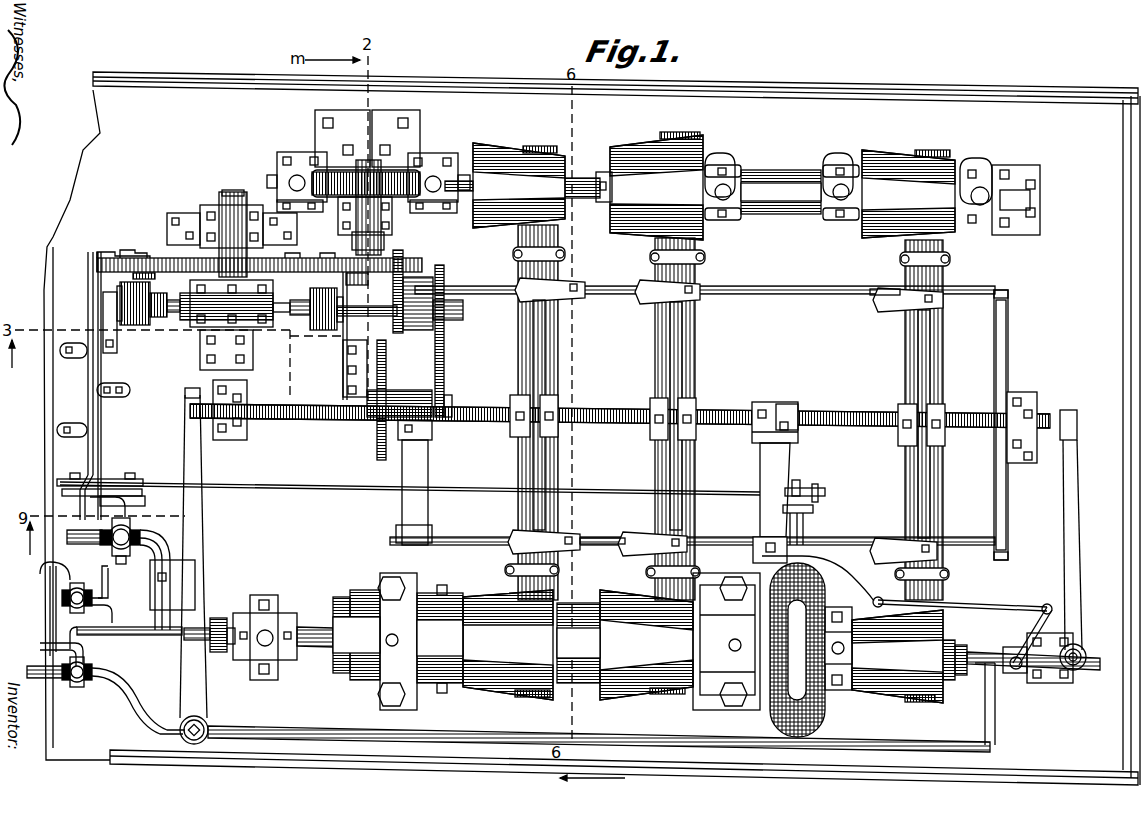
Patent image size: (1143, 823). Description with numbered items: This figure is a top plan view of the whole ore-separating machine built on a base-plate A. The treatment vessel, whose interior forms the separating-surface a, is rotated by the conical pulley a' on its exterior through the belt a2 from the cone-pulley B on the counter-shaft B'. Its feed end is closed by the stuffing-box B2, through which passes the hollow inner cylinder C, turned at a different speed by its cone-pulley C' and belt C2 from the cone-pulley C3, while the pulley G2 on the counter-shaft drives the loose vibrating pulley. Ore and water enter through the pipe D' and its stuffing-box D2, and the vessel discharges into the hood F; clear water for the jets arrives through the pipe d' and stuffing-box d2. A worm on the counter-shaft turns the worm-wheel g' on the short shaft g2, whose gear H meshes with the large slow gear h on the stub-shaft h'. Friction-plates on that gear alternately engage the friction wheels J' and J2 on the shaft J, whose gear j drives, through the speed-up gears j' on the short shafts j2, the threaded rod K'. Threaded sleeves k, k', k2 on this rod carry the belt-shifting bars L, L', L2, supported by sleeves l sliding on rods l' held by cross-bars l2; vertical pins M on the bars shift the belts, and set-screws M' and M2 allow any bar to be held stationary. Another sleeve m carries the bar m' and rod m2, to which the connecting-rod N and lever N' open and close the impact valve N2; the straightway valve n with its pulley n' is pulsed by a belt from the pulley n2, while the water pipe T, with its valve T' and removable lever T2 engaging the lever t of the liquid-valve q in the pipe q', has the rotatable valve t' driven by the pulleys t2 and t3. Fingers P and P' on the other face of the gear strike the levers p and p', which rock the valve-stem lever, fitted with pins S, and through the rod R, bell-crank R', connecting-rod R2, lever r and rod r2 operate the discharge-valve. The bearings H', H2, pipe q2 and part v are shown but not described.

The base-plate A is at (592, 428).
The cone-pulley B is at (656, 179).
The counter-shaft B' is at (588, 176).
The stuffing-box B2 is at (355, 595).
The inner cylinder C is at (546, 416).
The cone-pulley C' is at (897, 660).
The belt C2 is at (930, 508).
The cone-pulley C3 is at (875, 158).
The feed pipe D' is at (167, 569).
The stuffing-box D2 is at (215, 618).
The hood F is at (811, 650).
The pulley G2 is at (487, 148).
The gear H is at (372, 316).
The bearing H' is at (569, 641).
The coupling H2 is at (578, 612).
The shaft J is at (237, 331).
The friction wheel J' is at (352, 322).
The friction wheel J2 is at (140, 328).
The threaded rod K' is at (620, 410).
The belt-shifting bar L is at (939, 424).
The belt-shifting bar L' is at (696, 416).
The belt-shifting bar L2 is at (540, 333).
The vertical pins M is at (727, 410).
The set-screw M' is at (637, 415).
The set-screw M2 is at (895, 300).
The connecting-rod N is at (962, 596).
The lever N' is at (1020, 638).
The impact valve N2 is at (1005, 672).
The finger P is at (206, 244).
The finger P' is at (233, 241).
The rod R is at (130, 503).
The bell-crank lever R' is at (100, 472).
The connecting-rod R2 is at (295, 486).
The pins S is at (80, 514).
The pipe T is at (601, 707).
The valve T' is at (106, 695).
The lever T2 is at (45, 647).
The separating-surface a is at (508, 649).
The cone-pulley a' is at (605, 468).
The belt a2 is at (690, 372).
The pipe d' is at (1083, 555).
The stuffing-box d2 is at (957, 650).
The worm-wheel g' is at (368, 161).
The short shaft g2 is at (370, 160).
The large gear h is at (259, 285).
The stub-shaft h' is at (232, 221).
The gear j is at (428, 283).
The speed-up gears j' is at (415, 378).
The short longitudinal shafts j2 is at (443, 330).
The threaded sleeve k is at (931, 420).
The threaded sleeve k' is at (684, 414).
The threaded sleeve k2 is at (550, 405).
The sleeve l is at (736, 405).
The rod l' is at (692, 406).
The cross-bar l2 is at (418, 472).
The threaded sleeve m is at (800, 409).
The bar m' is at (788, 490).
The rod m2 is at (818, 578).
The valve n is at (1091, 670).
The belt pulley n' is at (1076, 676).
The pulley n2 is at (1065, 452).
The lever p is at (78, 386).
The compound lever p' is at (93, 386).
The liquid-valve q is at (91, 593).
The pipe q' is at (126, 611).
The pipe q2 is at (107, 610).
The lever r is at (812, 503).
The rod r2 is at (805, 530).
The lever t is at (41, 611).
The rotatable valve t' is at (194, 718).
The pulley t2 is at (208, 720).
The pulley t3 is at (190, 428).
The block v is at (760, 540).